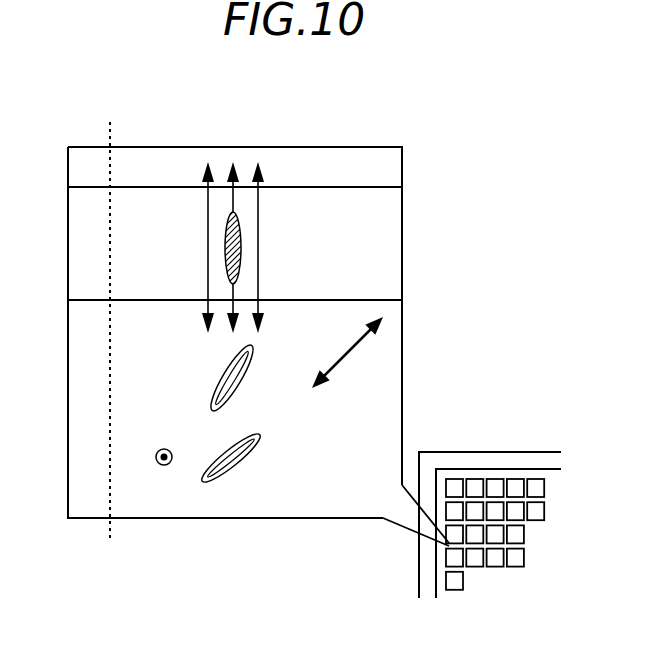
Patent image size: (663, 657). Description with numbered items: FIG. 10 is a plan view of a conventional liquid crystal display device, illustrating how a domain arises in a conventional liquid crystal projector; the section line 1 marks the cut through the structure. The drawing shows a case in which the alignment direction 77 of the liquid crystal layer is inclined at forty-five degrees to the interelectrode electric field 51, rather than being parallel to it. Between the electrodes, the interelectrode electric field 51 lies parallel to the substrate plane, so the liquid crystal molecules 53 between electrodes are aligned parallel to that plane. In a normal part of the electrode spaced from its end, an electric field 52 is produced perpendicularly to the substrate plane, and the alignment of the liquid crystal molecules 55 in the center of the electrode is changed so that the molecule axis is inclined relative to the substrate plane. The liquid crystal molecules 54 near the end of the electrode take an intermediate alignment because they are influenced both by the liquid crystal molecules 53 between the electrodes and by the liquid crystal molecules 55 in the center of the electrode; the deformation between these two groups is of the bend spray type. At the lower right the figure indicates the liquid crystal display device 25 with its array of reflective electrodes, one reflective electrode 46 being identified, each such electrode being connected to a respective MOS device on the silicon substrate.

The section line 1 is at (110, 333).
The liquid crystal display device R 25 is at (494, 469).
The reflective electrode 46 is at (446, 583).
The interelectrode electric field 51 is at (259, 237).
The electric field 52 is at (149, 458).
The liquid crystal molecules between electrodes 53 is at (225, 254).
The liquid crystal molecules near the end of the electrode 54 is at (239, 378).
The liquid crystal molecules in the center of the electrode 55 is at (234, 457).
The liquid crystal alignment direction 77 is at (346, 355).